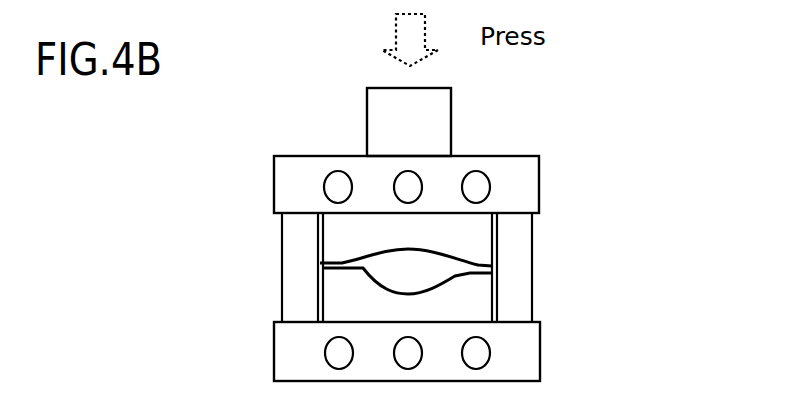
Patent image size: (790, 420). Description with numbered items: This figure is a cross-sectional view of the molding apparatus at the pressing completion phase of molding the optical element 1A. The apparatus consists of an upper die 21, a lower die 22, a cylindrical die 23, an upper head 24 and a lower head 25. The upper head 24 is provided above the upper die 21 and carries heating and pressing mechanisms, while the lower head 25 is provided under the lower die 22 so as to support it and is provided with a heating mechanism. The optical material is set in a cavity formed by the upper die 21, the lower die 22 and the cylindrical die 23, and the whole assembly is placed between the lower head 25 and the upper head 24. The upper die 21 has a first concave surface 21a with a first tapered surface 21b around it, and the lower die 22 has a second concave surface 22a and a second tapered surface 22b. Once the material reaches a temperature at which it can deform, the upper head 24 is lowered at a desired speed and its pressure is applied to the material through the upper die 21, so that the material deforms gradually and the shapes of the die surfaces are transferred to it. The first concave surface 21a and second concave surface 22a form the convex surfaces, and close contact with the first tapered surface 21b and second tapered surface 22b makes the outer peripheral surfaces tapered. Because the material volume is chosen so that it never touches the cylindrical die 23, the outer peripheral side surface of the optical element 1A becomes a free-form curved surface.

The optical element 1A is at (508, 264).
The upper die 21 is at (332, 237).
The first concave surface 21a is at (378, 255).
The first tapered surface 21b is at (345, 263).
The lower die 22 is at (353, 303).
The second concave surface 22a is at (433, 285).
The second tapered surface 22b is at (497, 273).
The cylindrical die 23 is at (453, 263).
The upper head 24 is at (518, 181).
The lower head 25 is at (527, 363).